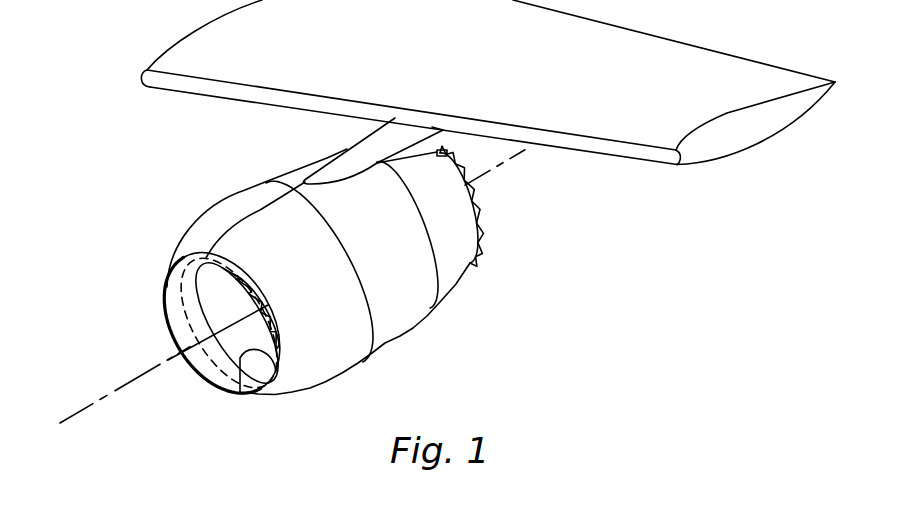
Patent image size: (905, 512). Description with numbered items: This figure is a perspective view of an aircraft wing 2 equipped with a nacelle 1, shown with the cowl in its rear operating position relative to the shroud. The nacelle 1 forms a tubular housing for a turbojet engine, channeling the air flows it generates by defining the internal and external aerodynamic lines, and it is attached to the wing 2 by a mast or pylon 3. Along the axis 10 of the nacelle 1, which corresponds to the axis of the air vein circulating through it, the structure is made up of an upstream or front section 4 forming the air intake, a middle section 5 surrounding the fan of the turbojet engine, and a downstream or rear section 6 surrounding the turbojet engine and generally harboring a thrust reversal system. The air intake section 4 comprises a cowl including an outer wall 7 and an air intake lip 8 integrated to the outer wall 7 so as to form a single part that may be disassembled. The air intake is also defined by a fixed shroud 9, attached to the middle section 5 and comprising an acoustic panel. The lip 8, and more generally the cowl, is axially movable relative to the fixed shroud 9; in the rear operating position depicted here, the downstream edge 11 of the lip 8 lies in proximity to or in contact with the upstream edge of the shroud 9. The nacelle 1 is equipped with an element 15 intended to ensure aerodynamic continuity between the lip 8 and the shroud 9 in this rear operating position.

The nacelle 1 is at (107, 153).
The wing 2 is at (718, 80).
The pylon 3 is at (365, 152).
The front section 4 is at (172, 238).
The middle section 5 is at (412, 330).
The rear section 6 is at (443, 248).
The outer wall 7 is at (302, 367).
The air intake lip 8 is at (168, 297).
The fixed shroud 9 is at (239, 392).
The axis 10 is at (508, 160).
The downstream edge 11 is at (172, 318).
The aerodynamic continuity element 15 is at (200, 370).